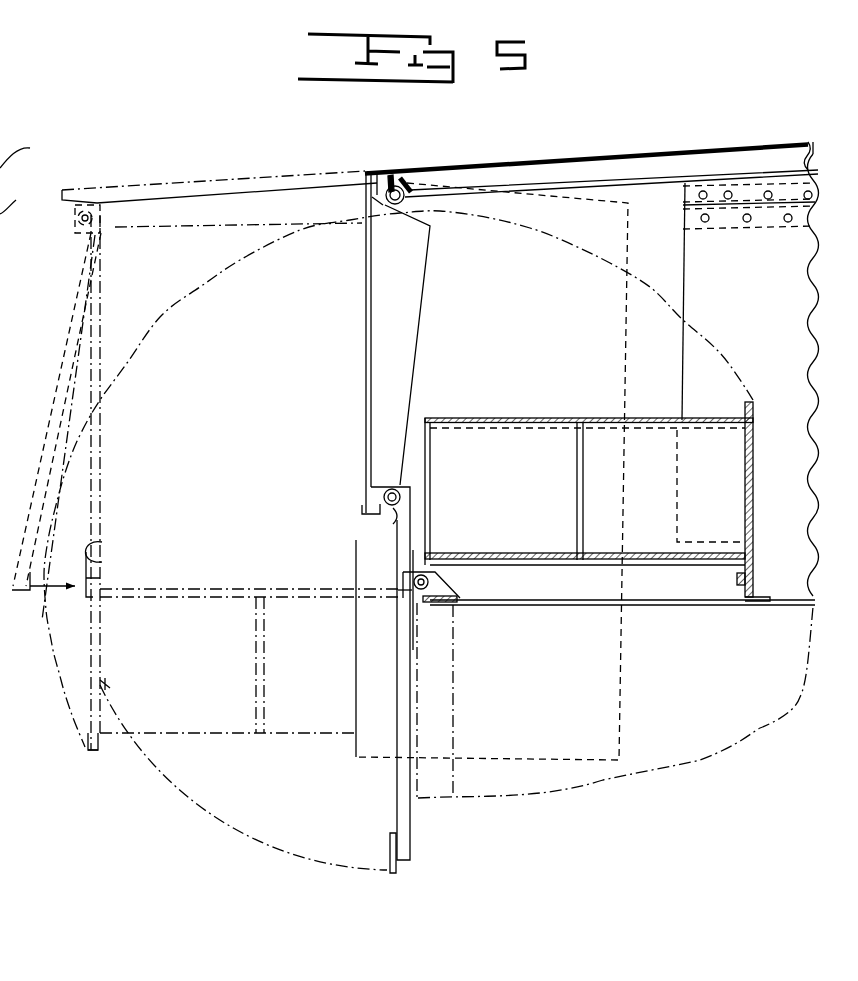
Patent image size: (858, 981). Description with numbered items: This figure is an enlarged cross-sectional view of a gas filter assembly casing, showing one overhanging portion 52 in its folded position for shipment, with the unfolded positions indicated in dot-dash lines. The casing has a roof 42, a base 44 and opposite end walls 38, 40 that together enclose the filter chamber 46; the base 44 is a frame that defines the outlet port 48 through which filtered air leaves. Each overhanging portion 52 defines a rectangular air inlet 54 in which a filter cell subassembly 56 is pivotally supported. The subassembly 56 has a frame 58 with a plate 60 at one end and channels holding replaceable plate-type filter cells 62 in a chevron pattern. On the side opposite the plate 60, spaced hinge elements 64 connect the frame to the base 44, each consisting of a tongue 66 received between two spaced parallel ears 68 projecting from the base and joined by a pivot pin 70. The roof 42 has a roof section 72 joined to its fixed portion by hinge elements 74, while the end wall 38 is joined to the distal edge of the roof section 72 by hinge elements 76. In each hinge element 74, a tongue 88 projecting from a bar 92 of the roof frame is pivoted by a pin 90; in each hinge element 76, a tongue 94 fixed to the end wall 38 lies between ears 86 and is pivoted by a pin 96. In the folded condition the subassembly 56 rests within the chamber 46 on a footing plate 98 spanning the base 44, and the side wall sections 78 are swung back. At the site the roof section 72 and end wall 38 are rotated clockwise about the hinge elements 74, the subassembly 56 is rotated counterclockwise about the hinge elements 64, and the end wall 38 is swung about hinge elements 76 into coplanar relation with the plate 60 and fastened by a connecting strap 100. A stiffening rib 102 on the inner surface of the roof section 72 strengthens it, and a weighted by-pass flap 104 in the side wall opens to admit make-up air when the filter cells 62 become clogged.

The end wall 38 is at (405, 722).
The end wall 40 is at (22, 196).
The roof 42 is at (658, 150).
The base 44 is at (440, 604).
The filter chamber 46 is at (764, 306).
The outlet port 48 is at (458, 596).
The overhanging portion 52 is at (183, 182).
The air inlet 54 is at (108, 749).
The filter cell subassembly 56 is at (520, 418).
The frame 58 is at (638, 420).
The plate 60 is at (750, 458).
The filter cell 62 is at (464, 436).
The hinge element 64 is at (2, 462).
The tongue 66 is at (443, 556).
The ear 68 is at (410, 600).
The pivot pin 70 is at (398, 590).
The roof section 72 is at (258, 178).
The hinge element 74 is at (394, 178).
The hinge element 76 is at (92, 208).
The side wall section 78 is at (620, 652).
The ears 86 is at (362, 513).
The tongue 88 is at (388, 182).
The pin 90 is at (387, 208).
The bar 92 is at (415, 182).
The tongue 94 is at (400, 518).
The pin 96 is at (78, 230).
The footing plate 98 is at (768, 560).
The connecting strap 100 is at (104, 550).
The stiffening rib 102 is at (233, 224).
The flap 104 is at (650, 290).